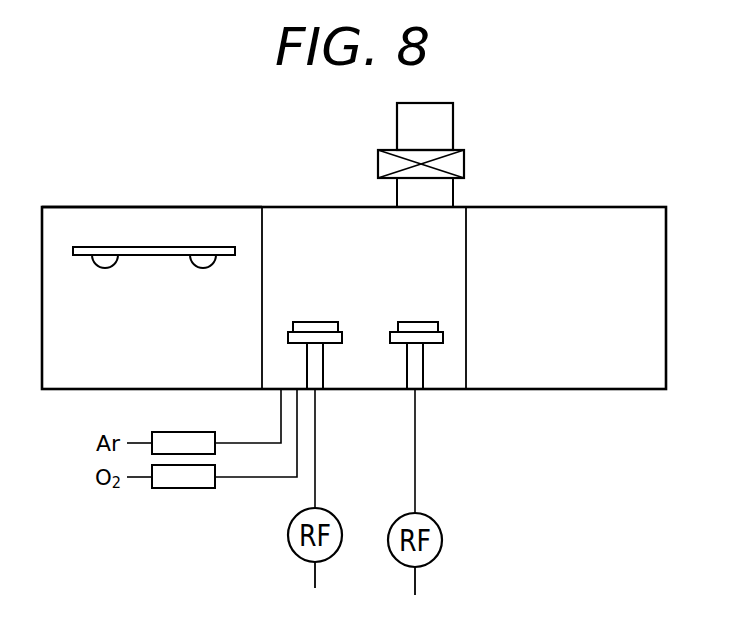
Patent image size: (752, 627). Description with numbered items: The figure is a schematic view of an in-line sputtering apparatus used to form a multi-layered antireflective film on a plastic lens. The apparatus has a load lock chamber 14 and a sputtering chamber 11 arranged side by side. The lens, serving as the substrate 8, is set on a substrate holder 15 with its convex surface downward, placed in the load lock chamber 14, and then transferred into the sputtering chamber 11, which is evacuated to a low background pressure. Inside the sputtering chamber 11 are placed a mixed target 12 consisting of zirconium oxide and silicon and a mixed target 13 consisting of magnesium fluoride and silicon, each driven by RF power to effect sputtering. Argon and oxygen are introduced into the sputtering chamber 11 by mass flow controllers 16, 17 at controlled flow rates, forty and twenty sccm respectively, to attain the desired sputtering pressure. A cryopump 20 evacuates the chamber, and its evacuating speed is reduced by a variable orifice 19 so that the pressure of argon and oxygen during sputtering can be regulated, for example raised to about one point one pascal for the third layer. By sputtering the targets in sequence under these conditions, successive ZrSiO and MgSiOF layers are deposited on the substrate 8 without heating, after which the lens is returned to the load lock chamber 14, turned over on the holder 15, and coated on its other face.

The substrate 8 is at (105, 269).
The sputtering chamber 11 is at (322, 207).
The mixed target 12 is at (308, 322).
The mixed target 13 is at (410, 322).
The load lock chamber 14 is at (90, 206).
The substrate holder 15 is at (179, 248).
The mass flow controller 16 is at (187, 432).
The mass flow controller 17 is at (194, 488).
The variable orifice 19 is at (464, 164).
The cryopump 20 is at (454, 113).